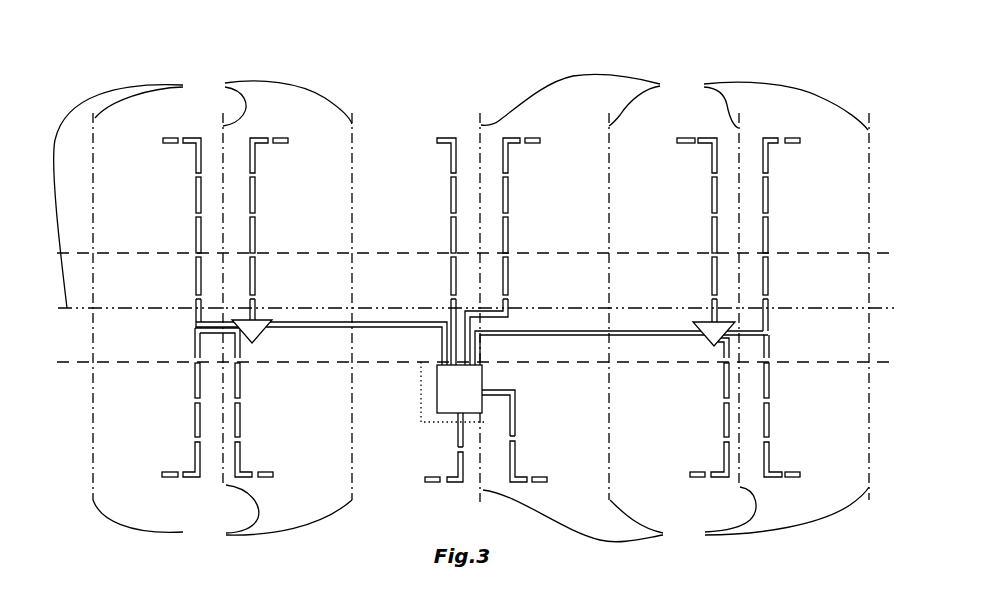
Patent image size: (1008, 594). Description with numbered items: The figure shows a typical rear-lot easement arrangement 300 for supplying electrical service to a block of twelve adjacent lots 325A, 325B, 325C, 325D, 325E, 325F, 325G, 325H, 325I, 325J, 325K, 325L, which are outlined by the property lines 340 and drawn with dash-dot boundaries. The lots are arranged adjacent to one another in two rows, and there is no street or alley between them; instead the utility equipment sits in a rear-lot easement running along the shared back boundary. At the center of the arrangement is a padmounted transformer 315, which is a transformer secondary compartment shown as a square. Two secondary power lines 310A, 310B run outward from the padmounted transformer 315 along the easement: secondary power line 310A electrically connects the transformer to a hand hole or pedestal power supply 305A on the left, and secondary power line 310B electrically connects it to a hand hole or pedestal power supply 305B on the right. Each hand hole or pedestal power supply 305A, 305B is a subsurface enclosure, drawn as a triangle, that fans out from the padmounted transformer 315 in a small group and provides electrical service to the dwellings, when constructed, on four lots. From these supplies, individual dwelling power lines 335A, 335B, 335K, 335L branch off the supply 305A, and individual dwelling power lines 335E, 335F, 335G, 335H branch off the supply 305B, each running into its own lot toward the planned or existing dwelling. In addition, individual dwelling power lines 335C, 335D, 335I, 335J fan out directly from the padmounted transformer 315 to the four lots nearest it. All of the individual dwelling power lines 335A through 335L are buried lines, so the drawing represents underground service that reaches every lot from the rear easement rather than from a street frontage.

The rear-lot easement arrangement 300 is at (172, 283).
The hand hole or pedestal power supply 305A is at (265, 338).
The hand hole or pedestal power supply 305B is at (700, 342).
The secondary power line 310A is at (424, 318).
The secondary power line 310B is at (599, 327).
The padmounted transformer 315 is at (442, 398).
The lot 325A is at (117, 437).
The lot 325B is at (270, 461).
The lot 325C is at (430, 462).
The lot 325D is at (591, 461).
The lot 325E is at (640, 449).
The lot 325F is at (797, 466).
The lot 325G is at (788, 189).
The lot 325H is at (632, 189).
The lot 325I is at (536, 192).
The lot 325J is at (378, 192).
The lot 325K is at (279, 197).
The lot 325L is at (173, 197).
The individual dwelling power line 335A is at (192, 478).
The individual dwelling power line 335B is at (245, 478).
The individual dwelling power line 335C is at (450, 483).
The individual dwelling power line 335D is at (521, 483).
The individual dwelling power line 335E is at (718, 478).
The individual dwelling power line 335F is at (770, 478).
The individual dwelling power line 335G is at (761, 137).
The individual dwelling power line 335H is at (708, 137).
The individual dwelling power line 335I is at (530, 135).
The individual dwelling power line 335J is at (452, 136).
The individual dwelling power line 335K is at (256, 137).
The individual dwelling power line 335L is at (192, 137).
The property lines 340 is at (461, 311).